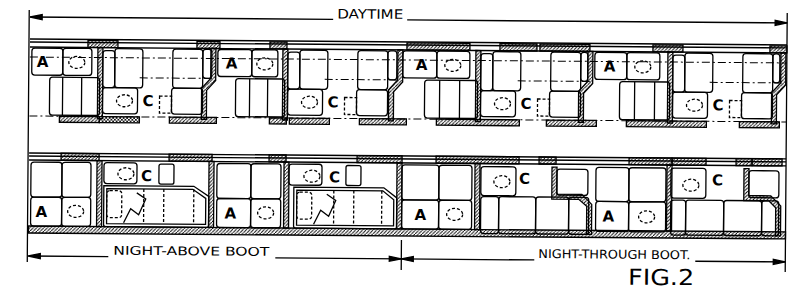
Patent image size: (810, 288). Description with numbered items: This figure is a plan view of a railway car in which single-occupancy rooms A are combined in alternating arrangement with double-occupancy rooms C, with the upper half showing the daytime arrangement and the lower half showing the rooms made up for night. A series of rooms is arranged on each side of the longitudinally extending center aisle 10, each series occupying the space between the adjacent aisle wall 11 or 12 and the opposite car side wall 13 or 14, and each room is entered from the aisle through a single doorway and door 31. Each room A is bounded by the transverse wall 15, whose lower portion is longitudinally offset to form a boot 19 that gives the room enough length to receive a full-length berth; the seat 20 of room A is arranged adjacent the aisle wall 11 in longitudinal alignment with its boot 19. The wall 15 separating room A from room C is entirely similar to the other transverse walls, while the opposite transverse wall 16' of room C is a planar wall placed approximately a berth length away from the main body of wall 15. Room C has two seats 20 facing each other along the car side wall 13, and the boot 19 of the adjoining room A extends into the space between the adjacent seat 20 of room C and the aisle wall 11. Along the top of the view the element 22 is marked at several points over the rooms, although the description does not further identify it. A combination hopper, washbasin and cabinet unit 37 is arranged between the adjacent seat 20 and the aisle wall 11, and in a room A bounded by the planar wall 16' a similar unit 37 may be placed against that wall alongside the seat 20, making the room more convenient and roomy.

The roof panel 22 is at (173, 39).
The seat 20 is at (363, 72).
The transverse wall 15 is at (410, 50).
The car side wall 13 is at (487, 46).
The transverse wall 16' is at (404, 127).
The hopper, washbasin and cabinet unit 37 is at (310, 113).
The center aisle 10 is at (367, 142).
The aisle wall 11 is at (466, 122).
The door 31 is at (545, 158).
The aisle wall 12 is at (558, 155).
The boot 19 is at (555, 182).
The car side wall 14 is at (465, 233).